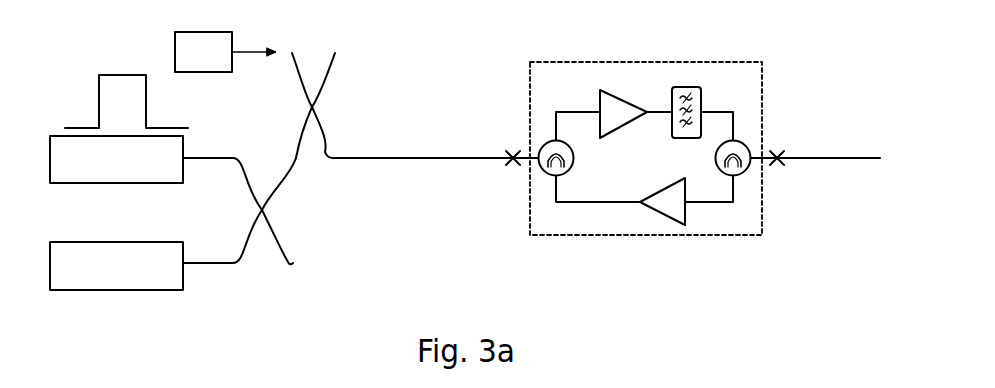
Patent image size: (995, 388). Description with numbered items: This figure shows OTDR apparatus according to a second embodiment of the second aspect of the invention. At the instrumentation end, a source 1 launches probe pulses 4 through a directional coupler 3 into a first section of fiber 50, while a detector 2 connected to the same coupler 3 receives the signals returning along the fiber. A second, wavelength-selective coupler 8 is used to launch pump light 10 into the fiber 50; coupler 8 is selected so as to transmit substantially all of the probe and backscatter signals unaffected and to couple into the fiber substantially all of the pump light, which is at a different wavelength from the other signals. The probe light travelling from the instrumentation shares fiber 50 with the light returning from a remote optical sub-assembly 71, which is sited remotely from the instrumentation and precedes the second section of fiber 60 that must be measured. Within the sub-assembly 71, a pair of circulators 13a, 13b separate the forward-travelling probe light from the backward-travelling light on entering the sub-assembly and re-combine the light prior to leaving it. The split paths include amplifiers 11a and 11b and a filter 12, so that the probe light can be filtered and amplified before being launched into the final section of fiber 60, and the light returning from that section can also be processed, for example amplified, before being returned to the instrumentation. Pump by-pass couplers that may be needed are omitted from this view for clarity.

The source 1 is at (126, 172).
The detector 2 is at (126, 279).
The coupler 3 is at (278, 230).
The probe pulses 4 is at (130, 114).
The wavelength-selective coupler 8 is at (325, 88).
The pump light 10 is at (218, 64).
The amplifier 11a is at (617, 95).
The amplifier 11b is at (663, 218).
The filter 12 is at (688, 83).
The circulator 13a is at (548, 173).
The circulator 13b is at (743, 172).
The first section of fiber 50 is at (472, 158).
The second section of fiber 60 is at (840, 158).
The sub-assembly 71 is at (572, 96).